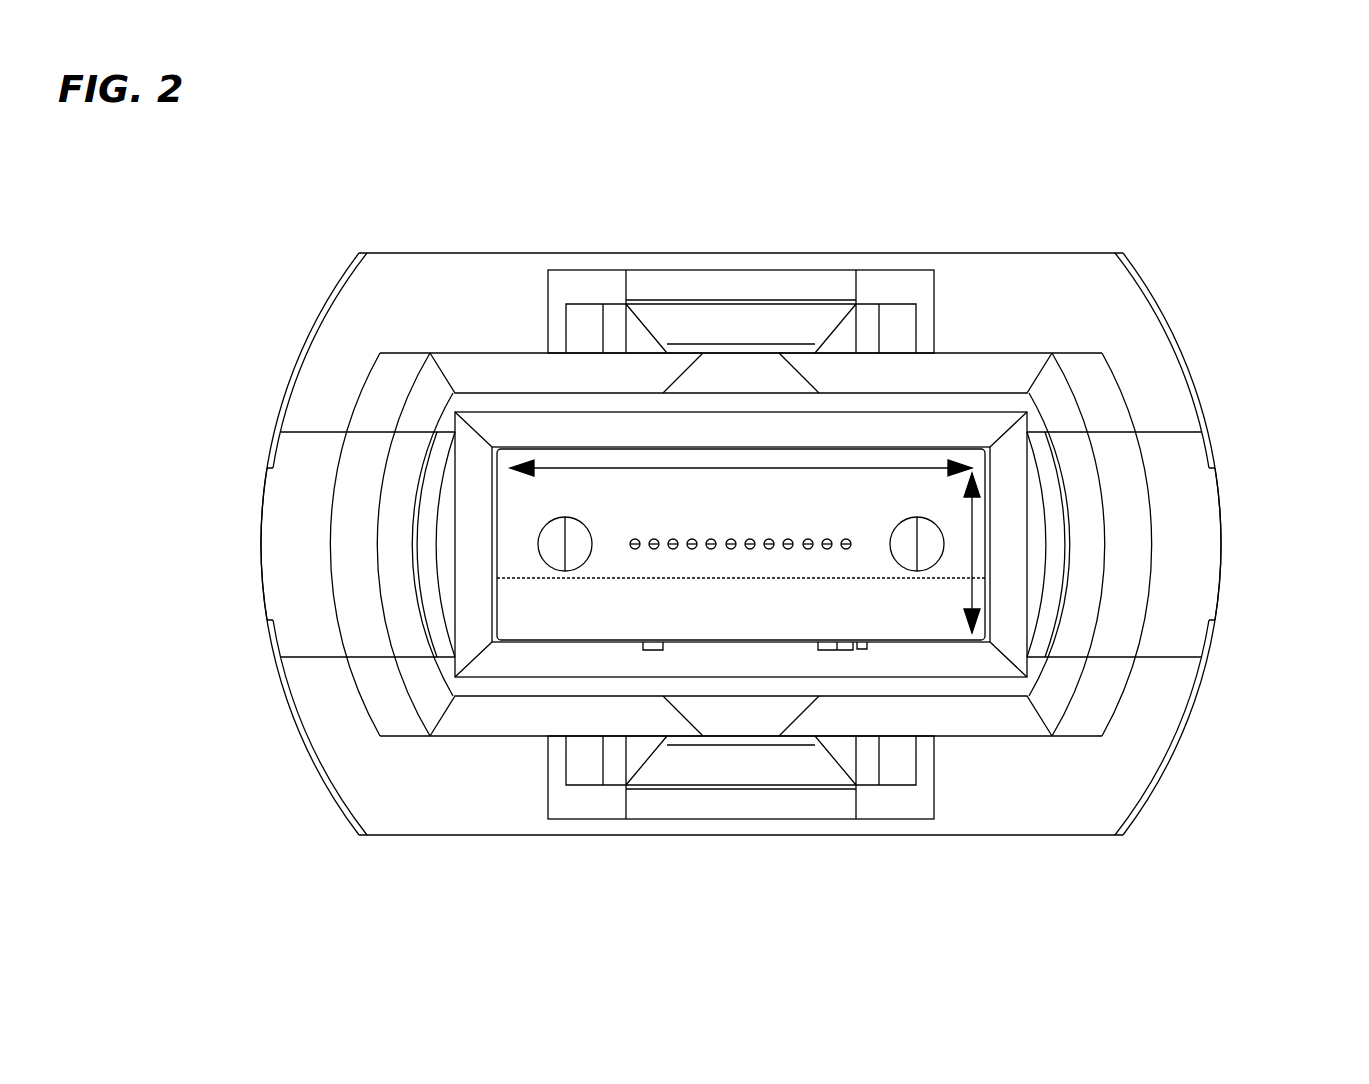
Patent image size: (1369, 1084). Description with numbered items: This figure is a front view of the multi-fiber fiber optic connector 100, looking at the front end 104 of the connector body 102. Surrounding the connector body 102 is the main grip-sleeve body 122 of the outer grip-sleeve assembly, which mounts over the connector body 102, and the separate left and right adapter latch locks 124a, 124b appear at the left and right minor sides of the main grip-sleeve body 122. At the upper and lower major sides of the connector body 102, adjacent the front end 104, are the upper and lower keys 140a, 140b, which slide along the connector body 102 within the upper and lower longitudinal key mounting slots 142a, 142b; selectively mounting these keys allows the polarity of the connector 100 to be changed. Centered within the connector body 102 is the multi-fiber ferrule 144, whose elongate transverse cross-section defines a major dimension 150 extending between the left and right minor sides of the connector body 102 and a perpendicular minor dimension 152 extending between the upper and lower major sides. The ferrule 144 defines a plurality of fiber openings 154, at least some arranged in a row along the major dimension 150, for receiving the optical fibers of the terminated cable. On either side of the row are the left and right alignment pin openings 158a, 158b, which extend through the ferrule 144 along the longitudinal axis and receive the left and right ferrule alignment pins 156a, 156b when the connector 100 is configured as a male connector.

The multi-fiber fiber optic connector 100 is at (1240, 198).
The connector body 102 is at (413, 359).
The front end 104 is at (470, 378).
The main grip-sleeve body 122 is at (480, 253).
The left adapter latch lock 124a is at (263, 492).
The right adapter latch lock 124b is at (1218, 500).
The upper key 140a is at (714, 310).
The lower key 140b is at (714, 785).
The upper longitudinal key mounting slot 142a is at (675, 352).
The lower longitudinal key mounting slot 142b is at (680, 735).
The multi-fiber ferrule 144 is at (943, 445).
The major dimension 150 is at (845, 468).
The minor dimension 152 is at (972, 557).
The fiber openings 154 is at (706, 565).
The left ferrule alignment pin 156a is at (548, 562).
The right ferrule alignment pin 156b is at (905, 562).
The left alignment pin opening 158a is at (525, 550).
The right alignment pin opening 158b is at (940, 590).